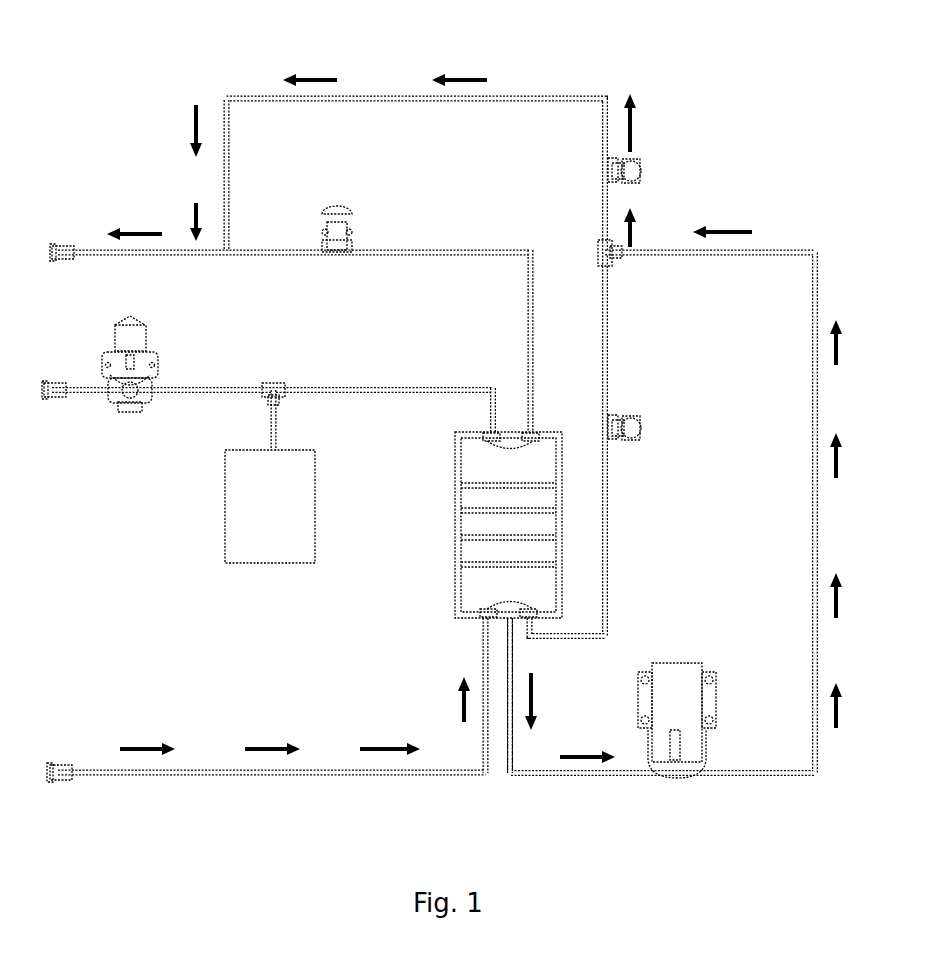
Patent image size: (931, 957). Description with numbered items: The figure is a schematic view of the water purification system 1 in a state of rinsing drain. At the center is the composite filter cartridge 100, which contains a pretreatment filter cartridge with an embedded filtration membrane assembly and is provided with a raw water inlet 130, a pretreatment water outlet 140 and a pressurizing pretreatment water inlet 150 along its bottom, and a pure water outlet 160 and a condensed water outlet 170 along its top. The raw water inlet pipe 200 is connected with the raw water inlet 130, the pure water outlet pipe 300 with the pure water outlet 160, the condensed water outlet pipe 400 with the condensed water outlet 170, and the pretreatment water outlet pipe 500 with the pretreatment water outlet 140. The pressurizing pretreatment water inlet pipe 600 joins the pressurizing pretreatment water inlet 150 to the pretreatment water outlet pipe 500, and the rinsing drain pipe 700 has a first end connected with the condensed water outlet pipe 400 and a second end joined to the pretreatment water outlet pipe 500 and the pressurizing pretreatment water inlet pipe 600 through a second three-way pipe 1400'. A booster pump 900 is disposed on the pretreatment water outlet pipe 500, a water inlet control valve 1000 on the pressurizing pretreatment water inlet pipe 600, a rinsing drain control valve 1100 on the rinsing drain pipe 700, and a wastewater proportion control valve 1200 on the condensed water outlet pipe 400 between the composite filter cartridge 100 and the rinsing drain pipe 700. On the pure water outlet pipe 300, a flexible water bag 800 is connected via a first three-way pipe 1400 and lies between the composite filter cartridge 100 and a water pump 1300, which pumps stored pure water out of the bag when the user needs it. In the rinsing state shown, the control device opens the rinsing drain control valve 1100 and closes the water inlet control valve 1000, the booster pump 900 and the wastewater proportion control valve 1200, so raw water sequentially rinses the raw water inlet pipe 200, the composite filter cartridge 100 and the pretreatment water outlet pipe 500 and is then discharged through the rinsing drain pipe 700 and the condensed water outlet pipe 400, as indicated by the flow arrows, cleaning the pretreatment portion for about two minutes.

The water purification system 1 is at (388, 75).
The composite filter cartridge 100 is at (500, 522).
The raw water inlet 130 is at (481, 622).
The pretreatment water outlet 140 is at (515, 640).
The pressurizing pretreatment water inlet 150 is at (530, 625).
The pure water outlet 160 is at (491, 430).
The condensed water outlet 170 is at (532, 430).
The raw water inlet pipe 200 is at (314, 777).
The pure water outlet pipe 300 is at (404, 388).
The condensed water outlet pipe 400 is at (418, 257).
The pretreatment water outlet pipe 500 is at (768, 777).
The pressurizing pretreatment water inlet pipe 600 is at (608, 540).
The rinsing drain pipe 700 is at (415, 101).
The flexible water bag 800 is at (265, 545).
The booster pump 900 is at (680, 690).
The water inlet control valve 1000 is at (632, 428).
The rinsing drain control valve 1100 is at (630, 178).
The wastewater proportion control valve 1200 is at (340, 222).
The water pump 1300 is at (125, 330).
The first three-way pipe 1400 is at (236, 389).
The second three-way pipe 1400' is at (552, 233).